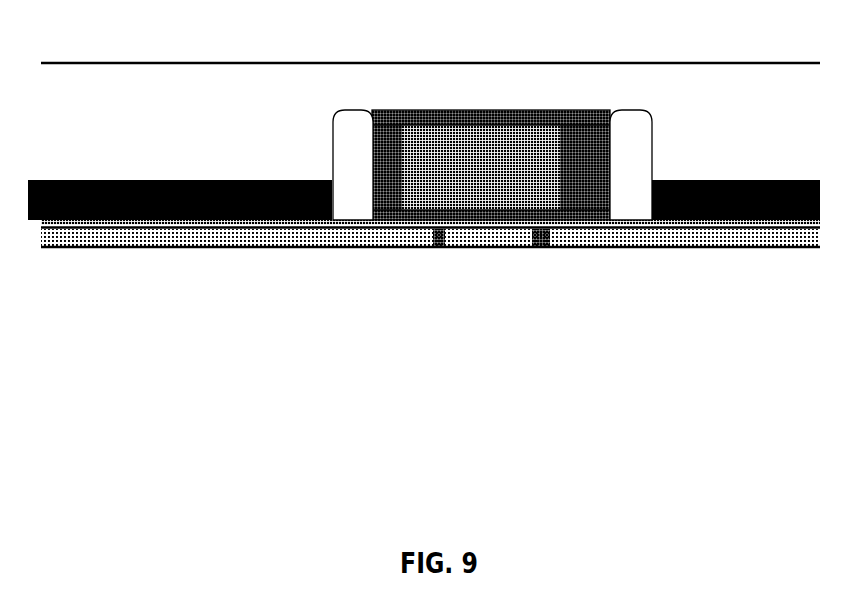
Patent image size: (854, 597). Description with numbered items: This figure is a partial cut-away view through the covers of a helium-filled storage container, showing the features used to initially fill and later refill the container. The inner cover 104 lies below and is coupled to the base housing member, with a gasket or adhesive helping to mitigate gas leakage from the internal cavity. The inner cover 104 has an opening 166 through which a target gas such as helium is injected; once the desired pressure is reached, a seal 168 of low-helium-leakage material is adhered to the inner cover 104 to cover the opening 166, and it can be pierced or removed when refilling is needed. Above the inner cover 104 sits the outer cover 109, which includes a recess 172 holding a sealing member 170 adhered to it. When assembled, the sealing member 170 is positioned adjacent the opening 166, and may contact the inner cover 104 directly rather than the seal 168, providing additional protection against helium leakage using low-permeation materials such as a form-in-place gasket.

The inner cover 104 is at (143, 240).
The outer cover 109 is at (162, 75).
The opening 166 is at (533, 247).
The seal 168 is at (442, 228).
The sealing member 170 is at (438, 117).
The recess 172 is at (648, 155).